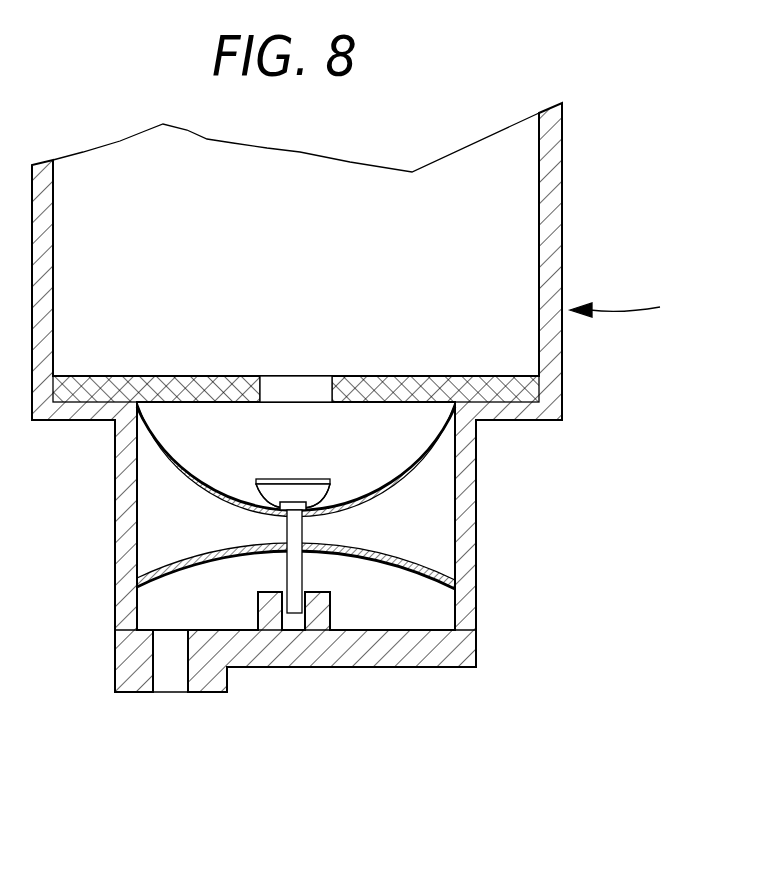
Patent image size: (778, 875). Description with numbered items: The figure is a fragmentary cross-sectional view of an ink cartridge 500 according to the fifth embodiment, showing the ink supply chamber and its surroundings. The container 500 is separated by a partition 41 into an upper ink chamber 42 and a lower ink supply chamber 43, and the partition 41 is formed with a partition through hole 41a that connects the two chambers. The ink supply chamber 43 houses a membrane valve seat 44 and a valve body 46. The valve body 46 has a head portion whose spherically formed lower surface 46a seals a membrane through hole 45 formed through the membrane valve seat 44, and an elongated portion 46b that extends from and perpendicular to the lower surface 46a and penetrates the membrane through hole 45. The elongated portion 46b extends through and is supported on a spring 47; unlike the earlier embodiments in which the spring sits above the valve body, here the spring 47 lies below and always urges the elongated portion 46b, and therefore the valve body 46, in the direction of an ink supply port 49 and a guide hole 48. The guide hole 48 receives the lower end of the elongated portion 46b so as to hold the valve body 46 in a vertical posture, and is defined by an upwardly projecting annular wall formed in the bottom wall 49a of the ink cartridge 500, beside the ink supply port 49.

The ink cartridge 500 is at (638, 309).
The partition 41 is at (523, 388).
The partition through hole 41a is at (302, 381).
The ink chamber 42 is at (562, 163).
The ink supply chamber 43 is at (167, 512).
The membrane valve seat 44 is at (420, 462).
The membrane through hole 45 is at (304, 509).
The valve body 46 is at (290, 478).
The lower surface 46a is at (334, 497).
The elongated portion 46b is at (287, 572).
The spring 47 is at (422, 565).
The guide hole 48 is at (293, 630).
The ink supply port 49 is at (173, 680).
The bottom wall 49a is at (443, 648).